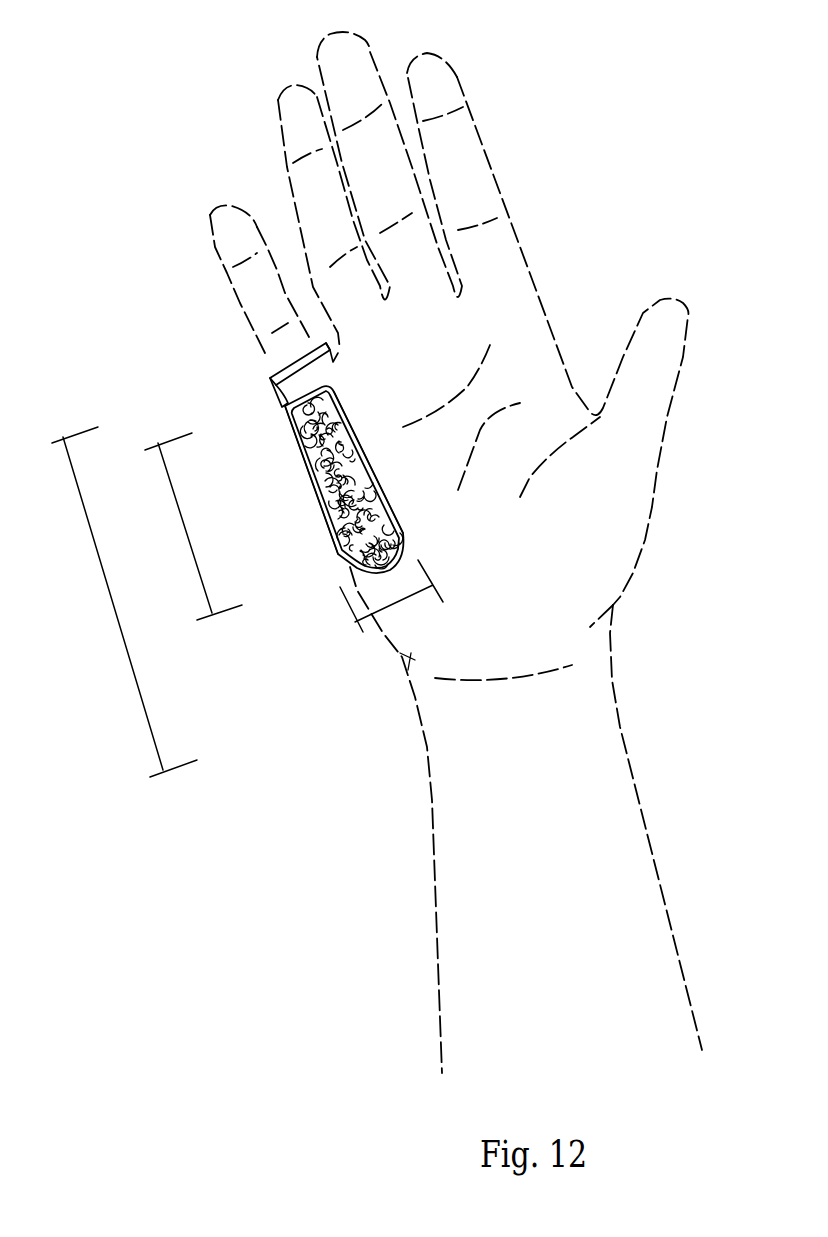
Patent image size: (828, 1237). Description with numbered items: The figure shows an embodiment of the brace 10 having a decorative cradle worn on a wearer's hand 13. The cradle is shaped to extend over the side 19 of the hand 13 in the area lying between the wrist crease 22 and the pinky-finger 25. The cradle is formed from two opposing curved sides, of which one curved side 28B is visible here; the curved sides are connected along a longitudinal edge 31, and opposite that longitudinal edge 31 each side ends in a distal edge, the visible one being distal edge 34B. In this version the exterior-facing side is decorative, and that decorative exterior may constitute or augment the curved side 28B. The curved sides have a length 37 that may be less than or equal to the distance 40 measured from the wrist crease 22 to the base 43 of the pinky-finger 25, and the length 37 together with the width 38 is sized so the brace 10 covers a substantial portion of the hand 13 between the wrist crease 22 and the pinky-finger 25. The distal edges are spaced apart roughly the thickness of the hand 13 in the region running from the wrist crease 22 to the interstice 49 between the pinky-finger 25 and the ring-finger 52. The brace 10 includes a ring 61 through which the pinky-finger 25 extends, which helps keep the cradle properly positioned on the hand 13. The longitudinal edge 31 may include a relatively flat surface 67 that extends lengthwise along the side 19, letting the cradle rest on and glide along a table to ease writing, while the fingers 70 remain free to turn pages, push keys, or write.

The brace 10 is at (351, 510).
The hand 13 is at (502, 326).
The side of the hand 19 is at (392, 635).
The wrist crease 22 is at (567, 667).
The pinky-finger 25 is at (213, 253).
The curved side 28B is at (362, 436).
The longitudinal edge 31 is at (306, 488).
The distal edge 34B is at (395, 478).
The length 37 is at (173, 500).
The width 38 is at (405, 600).
The distance 40 is at (147, 718).
The base of the pinky-finger 43 is at (327, 348).
The interstice 49 is at (327, 338).
The ring-finger 52 is at (277, 128).
The ring 61 is at (279, 372).
The relatively flat surface 67 is at (289, 450).
The fingers 70 is at (515, 163).